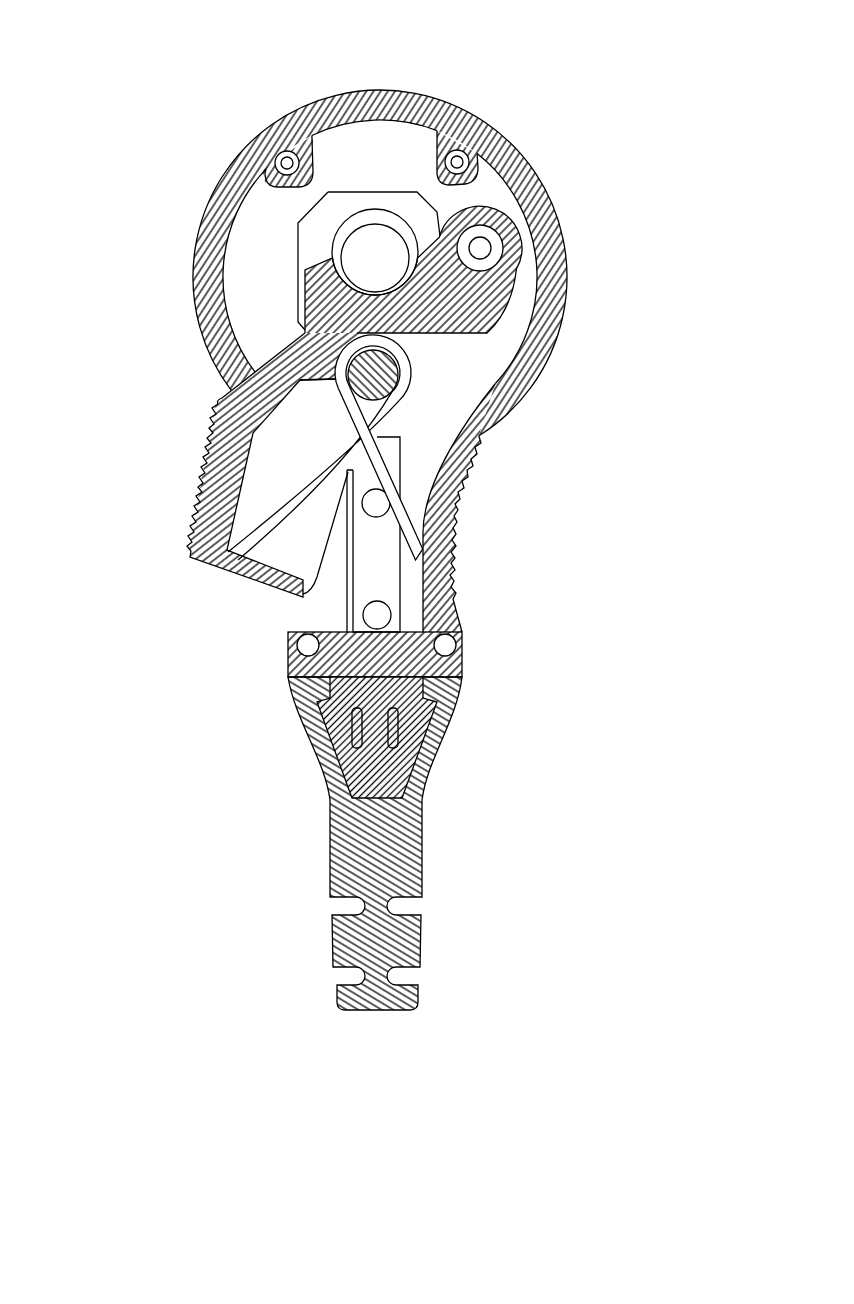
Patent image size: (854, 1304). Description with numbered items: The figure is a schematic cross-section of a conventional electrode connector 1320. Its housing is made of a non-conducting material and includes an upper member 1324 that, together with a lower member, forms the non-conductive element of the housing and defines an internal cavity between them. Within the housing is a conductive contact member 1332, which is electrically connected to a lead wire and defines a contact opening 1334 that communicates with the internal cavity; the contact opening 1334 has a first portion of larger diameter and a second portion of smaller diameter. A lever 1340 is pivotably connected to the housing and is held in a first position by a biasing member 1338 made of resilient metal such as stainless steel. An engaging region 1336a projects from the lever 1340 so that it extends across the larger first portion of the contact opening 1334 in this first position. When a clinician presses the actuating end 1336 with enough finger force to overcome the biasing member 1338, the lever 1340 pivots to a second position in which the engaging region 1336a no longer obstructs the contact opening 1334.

The electrode connector 1320 is at (234, 64).
The upper member 1324 is at (567, 203).
The contact member 1332 is at (330, 184).
The contact opening 1334 is at (378, 252).
The engaging region 1336a is at (325, 265).
The actuating end 1336 is at (184, 473).
The biasing member 1338 is at (220, 403).
The lever 1340 is at (265, 348).